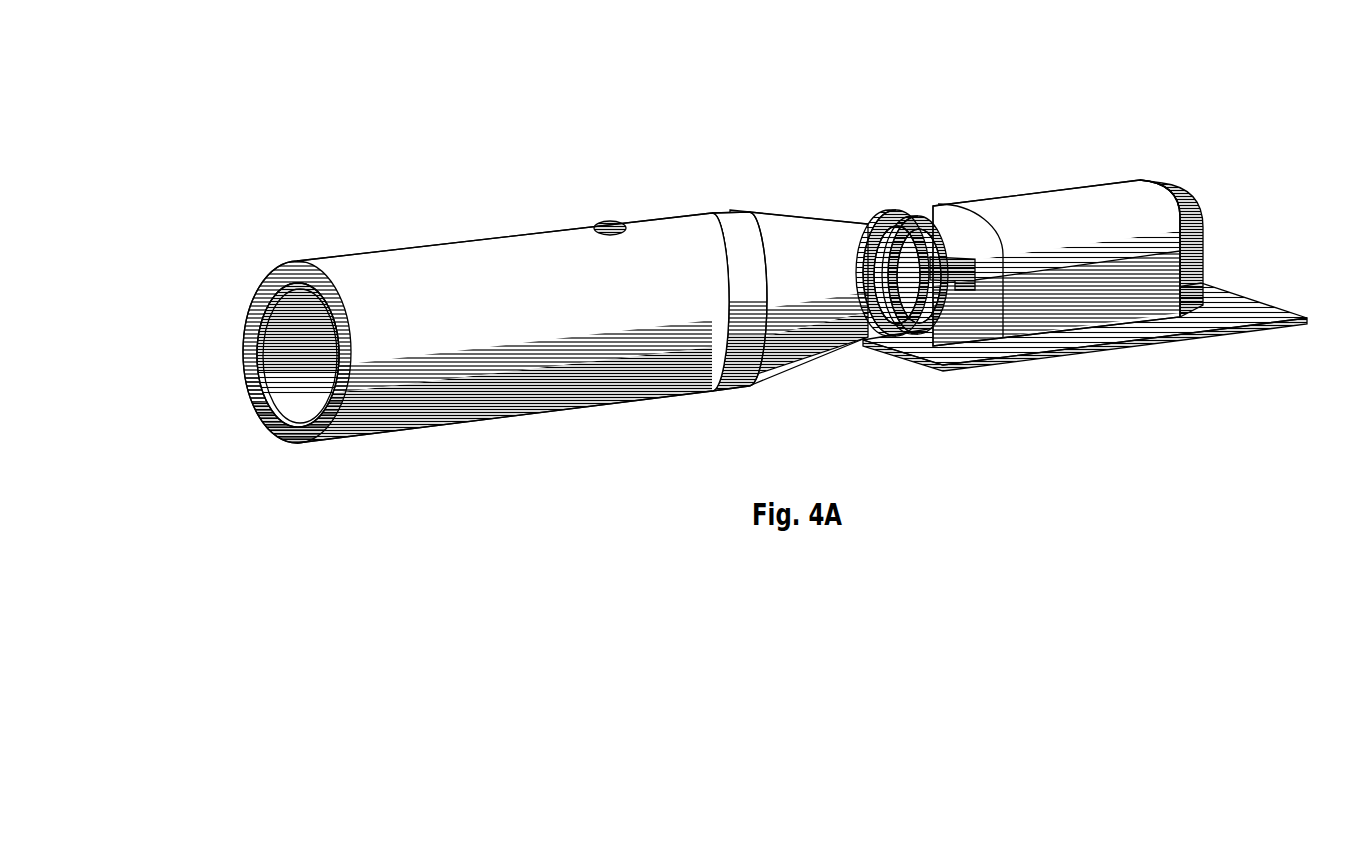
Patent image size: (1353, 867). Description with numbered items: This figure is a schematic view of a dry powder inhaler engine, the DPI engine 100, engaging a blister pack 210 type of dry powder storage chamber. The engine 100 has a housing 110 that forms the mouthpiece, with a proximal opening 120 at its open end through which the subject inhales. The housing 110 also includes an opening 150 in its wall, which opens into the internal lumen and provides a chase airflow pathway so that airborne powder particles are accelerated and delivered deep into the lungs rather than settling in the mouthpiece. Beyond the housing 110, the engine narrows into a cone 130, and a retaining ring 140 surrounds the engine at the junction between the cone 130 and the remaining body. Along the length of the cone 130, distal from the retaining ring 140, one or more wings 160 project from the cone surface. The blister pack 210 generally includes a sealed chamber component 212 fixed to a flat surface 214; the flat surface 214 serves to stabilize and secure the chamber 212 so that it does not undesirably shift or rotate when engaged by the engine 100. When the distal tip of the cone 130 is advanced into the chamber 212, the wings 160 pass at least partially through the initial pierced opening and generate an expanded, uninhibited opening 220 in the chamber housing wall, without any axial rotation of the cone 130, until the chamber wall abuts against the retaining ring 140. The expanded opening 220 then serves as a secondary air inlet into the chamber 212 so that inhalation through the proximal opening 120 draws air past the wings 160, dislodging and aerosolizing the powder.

The DPI engine 100 is at (594, 227).
The housing 110 is at (437, 255).
The proximal opening 120 is at (295, 358).
The cone 130 is at (782, 238).
The retaining ring 140 is at (909, 222).
The opening 150 is at (605, 222).
The wing 160 is at (958, 257).
The blister pack 210 is at (1098, 188).
The sealed chamber component 212 is at (1177, 207).
The flat surface 214 is at (1247, 308).
The expanded opening 220 is at (963, 290).